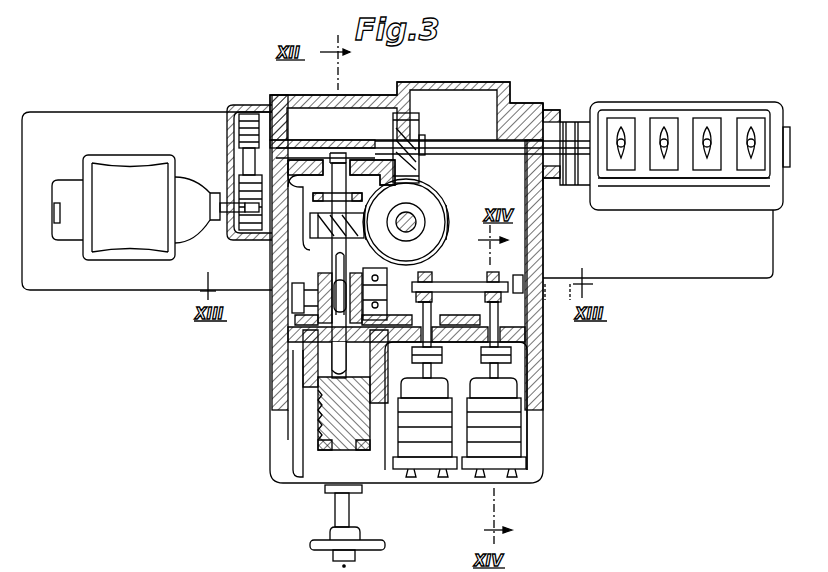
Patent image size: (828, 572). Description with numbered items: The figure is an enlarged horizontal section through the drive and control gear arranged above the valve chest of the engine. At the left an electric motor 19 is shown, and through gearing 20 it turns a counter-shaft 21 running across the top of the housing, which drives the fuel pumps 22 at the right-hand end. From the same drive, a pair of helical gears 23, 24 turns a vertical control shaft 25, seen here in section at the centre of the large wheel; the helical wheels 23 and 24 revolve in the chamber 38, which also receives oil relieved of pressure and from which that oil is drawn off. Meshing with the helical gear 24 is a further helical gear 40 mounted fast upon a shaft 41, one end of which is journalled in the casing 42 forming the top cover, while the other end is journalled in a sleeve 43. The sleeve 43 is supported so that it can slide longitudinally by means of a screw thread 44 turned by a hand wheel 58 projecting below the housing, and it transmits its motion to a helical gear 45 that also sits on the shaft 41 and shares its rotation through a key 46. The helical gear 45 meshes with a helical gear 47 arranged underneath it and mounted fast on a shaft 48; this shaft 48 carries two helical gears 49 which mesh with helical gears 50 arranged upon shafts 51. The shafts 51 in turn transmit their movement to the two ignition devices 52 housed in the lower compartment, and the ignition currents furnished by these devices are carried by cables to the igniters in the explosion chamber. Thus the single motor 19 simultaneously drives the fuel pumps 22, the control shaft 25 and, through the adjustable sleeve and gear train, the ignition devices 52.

The electric motor 19 is at (148, 207).
The gearing 20 is at (233, 238).
The counter-shaft 21 is at (433, 151).
The fuel pumps 22 is at (756, 122).
The helical gear 23 is at (408, 171).
The helical gear 24 is at (447, 222).
The vertical control shaft 25 is at (411, 223).
The chamber 38 is at (504, 225).
The helical gear 40 is at (318, 222).
The shaft 41 is at (336, 246).
The casing 42 is at (308, 100).
The sleeve 43 is at (322, 440).
The screw thread 44 is at (330, 428).
The helical gear 45 is at (296, 297).
The key 46 is at (340, 280).
The helical gear 47 is at (424, 320).
The shaft 48 is at (467, 287).
The helical gears 49 is at (488, 274).
The helical gears 50 is at (472, 303).
The shafts 51 is at (493, 322).
The ignition devices 52 is at (480, 453).
The hand wheel 58 is at (363, 540).